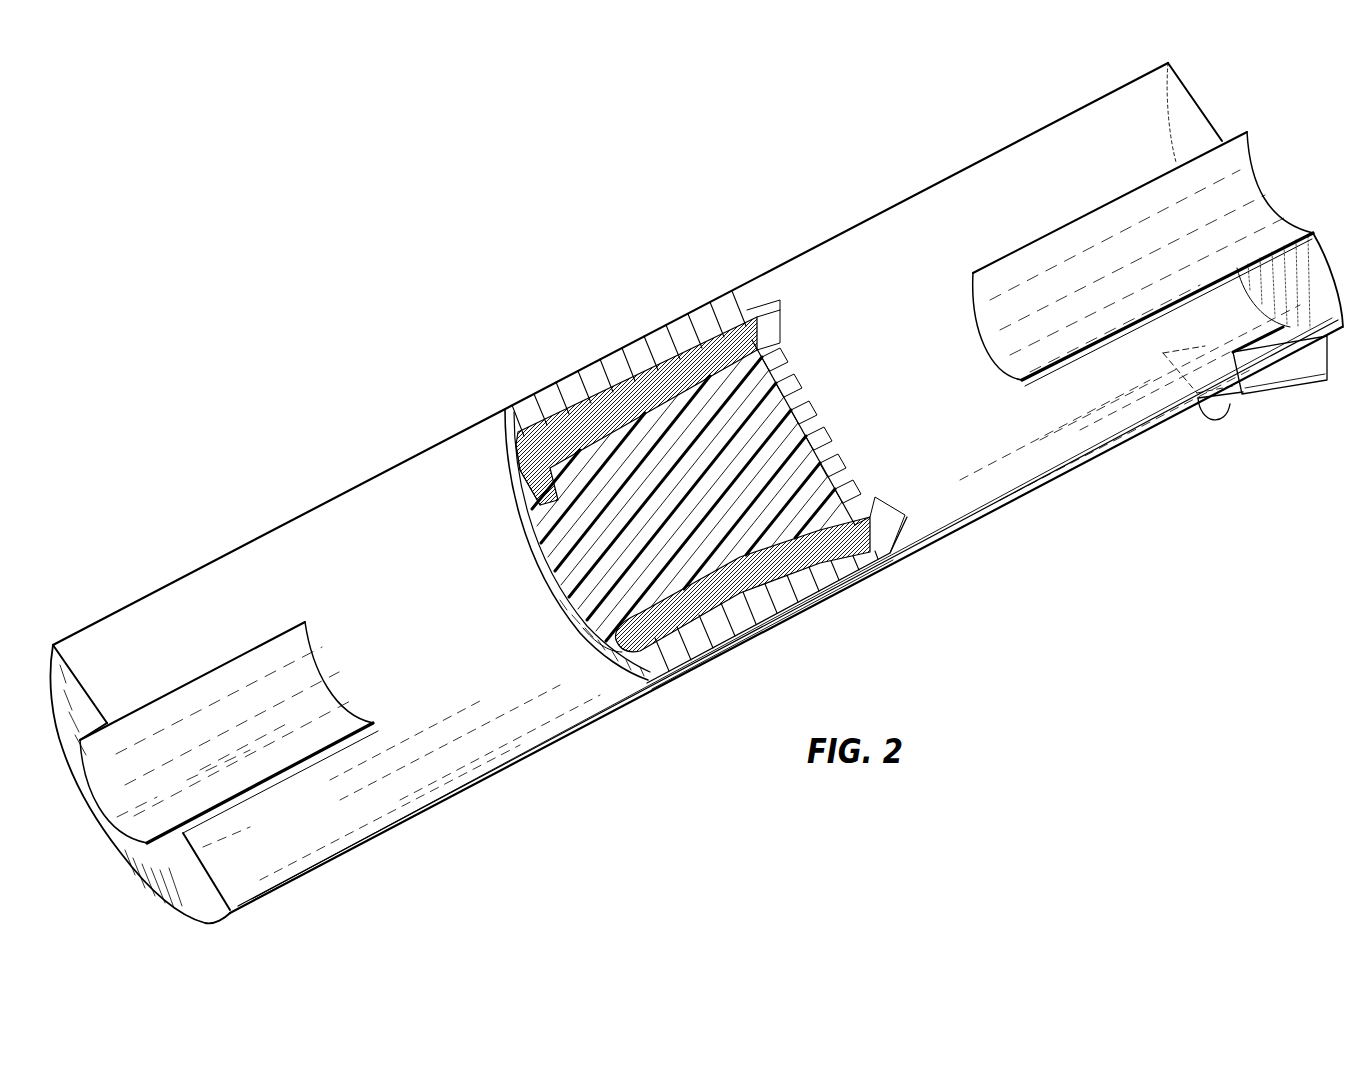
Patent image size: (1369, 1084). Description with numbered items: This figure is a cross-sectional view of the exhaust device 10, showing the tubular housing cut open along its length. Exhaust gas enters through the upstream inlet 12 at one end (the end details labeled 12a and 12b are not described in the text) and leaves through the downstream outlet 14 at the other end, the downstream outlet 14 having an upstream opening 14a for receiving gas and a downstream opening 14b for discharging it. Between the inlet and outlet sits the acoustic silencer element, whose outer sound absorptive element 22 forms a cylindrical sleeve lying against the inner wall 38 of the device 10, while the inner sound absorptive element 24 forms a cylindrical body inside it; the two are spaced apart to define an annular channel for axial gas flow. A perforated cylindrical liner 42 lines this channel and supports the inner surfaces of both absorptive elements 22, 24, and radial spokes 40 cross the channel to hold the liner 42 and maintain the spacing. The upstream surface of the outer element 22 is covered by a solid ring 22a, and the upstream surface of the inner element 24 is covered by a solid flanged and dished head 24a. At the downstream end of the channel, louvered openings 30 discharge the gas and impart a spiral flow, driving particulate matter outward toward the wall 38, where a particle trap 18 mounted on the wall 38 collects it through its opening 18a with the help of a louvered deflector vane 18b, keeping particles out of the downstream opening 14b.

The device 10 is at (621, 210).
The upstream inlet 12 is at (219, 775).
The end face of first housing section 12a is at (120, 790).
The slot of first housing section 12b is at (343, 703).
The downstream outlet 14 is at (1158, 332).
The upstream opening 14a is at (1013, 325).
The downstream opening 14b is at (1237, 177).
The particle trap 18 is at (1261, 352).
The opening 18a is at (1240, 370).
The louvered deflector vane 18b is at (1283, 325).
The outer sound absorptive element 22 is at (601, 393).
The solid ring 22a is at (503, 418).
The inner sound absorptive element 24 is at (719, 665).
The solid flanged and dished head 24a is at (583, 640).
The louvered openings 30 is at (800, 397).
The wall 38 is at (317, 530).
The radial spokes 40 is at (512, 493).
The perforated cylindrical liner 42 is at (652, 693).